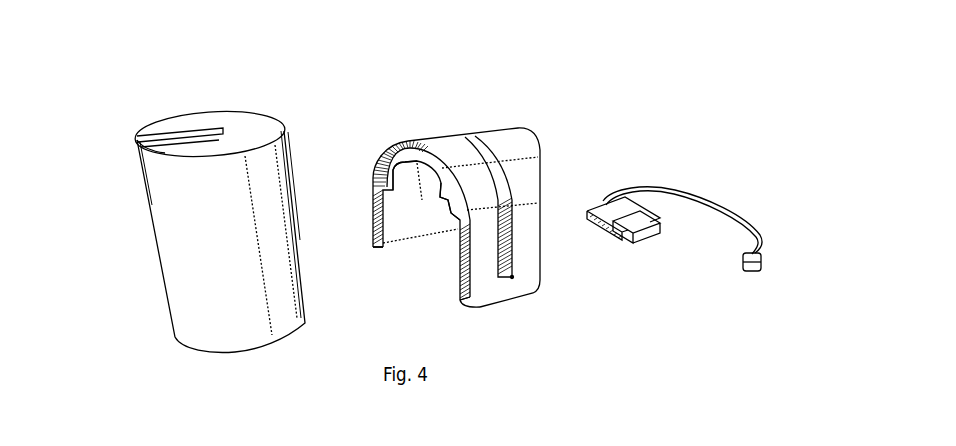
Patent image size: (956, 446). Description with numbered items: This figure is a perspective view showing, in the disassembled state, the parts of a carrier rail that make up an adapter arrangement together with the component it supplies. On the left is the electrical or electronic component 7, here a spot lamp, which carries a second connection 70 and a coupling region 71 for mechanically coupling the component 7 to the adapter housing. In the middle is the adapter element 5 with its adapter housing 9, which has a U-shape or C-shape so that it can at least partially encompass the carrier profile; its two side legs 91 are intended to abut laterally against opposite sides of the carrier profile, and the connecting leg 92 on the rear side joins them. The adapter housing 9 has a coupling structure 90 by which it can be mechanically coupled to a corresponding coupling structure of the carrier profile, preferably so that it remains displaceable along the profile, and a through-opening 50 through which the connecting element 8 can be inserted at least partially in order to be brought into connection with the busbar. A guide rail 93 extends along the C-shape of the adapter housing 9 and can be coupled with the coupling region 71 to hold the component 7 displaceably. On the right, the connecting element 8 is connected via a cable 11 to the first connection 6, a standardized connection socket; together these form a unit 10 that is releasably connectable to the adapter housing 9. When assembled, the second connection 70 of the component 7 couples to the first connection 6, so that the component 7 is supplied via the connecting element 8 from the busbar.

The electrical or electronic component 7 is at (204, 197).
The second connection 70 is at (207, 125).
The coupling region 71 is at (135, 155).
The adapter housing 9 is at (460, 198).
The adapter element 5 is at (540, 110).
The connecting leg 92 is at (500, 140).
The guide rail 93 is at (514, 280).
The through-opening 50 is at (405, 188).
The coupling structure 90 is at (443, 203).
The side legs 91 is at (371, 241).
The unit 10 is at (674, 237).
The connecting element 8 is at (614, 241).
The cable 11 is at (692, 190).
The first connection 6 is at (745, 277).